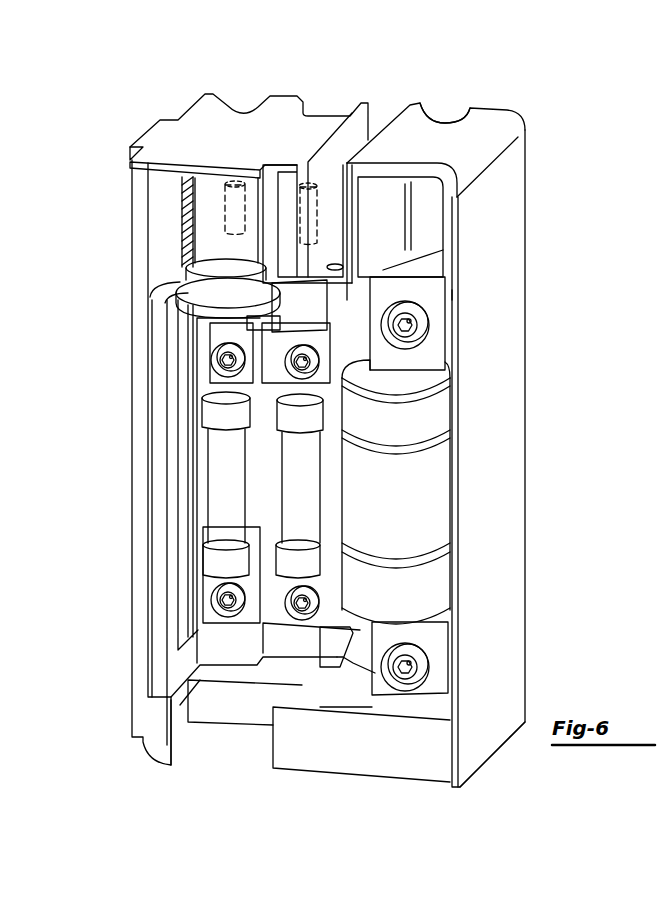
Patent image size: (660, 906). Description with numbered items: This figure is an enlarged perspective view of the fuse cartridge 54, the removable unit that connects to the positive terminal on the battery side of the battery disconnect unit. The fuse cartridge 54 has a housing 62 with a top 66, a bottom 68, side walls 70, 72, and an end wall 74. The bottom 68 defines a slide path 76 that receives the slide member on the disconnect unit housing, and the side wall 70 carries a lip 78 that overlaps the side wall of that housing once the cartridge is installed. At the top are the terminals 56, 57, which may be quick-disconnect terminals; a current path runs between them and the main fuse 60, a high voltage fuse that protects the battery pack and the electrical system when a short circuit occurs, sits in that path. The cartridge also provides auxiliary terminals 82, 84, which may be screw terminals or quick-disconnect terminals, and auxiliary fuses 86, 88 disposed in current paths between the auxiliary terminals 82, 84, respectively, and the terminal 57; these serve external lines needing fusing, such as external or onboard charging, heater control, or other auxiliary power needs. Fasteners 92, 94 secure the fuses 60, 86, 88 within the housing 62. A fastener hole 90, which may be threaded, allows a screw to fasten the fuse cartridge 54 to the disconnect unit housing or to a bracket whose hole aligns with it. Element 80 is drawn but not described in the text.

The fuse cartridge 54 is at (160, 85).
The terminal 56 is at (432, 120).
The terminal 57 is at (213, 240).
The main fuse 60 is at (400, 425).
The housing 62 is at (512, 218).
The top 66 is at (193, 128).
The bottom 68 is at (293, 697).
The side wall 70 is at (506, 570).
The side wall 72 is at (132, 522).
The end wall 74 is at (523, 297).
The slide path 76 is at (180, 708).
The lip 78 is at (463, 737).
The top plate 80 is at (147, 152).
The auxiliary terminal 82 is at (300, 180).
The auxiliary terminal 84 is at (222, 200).
The auxiliary fuse 86 is at (306, 462).
The auxiliary fuse 88 is at (217, 455).
The fastener hole 90 is at (330, 270).
The fastener 92 is at (408, 312).
The fastener 94 is at (213, 362).